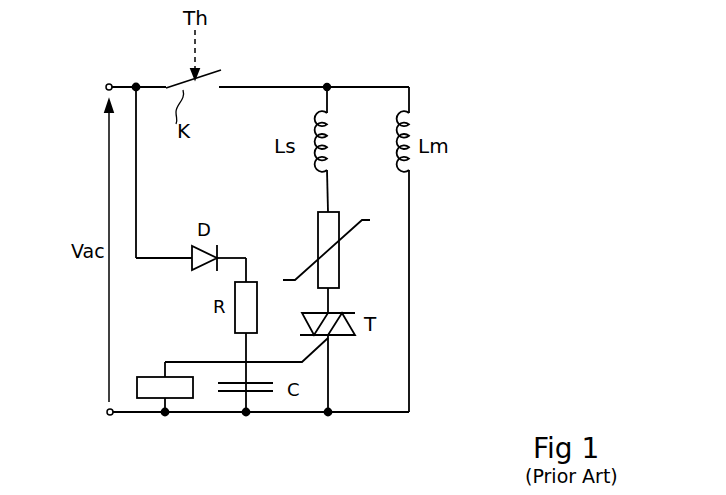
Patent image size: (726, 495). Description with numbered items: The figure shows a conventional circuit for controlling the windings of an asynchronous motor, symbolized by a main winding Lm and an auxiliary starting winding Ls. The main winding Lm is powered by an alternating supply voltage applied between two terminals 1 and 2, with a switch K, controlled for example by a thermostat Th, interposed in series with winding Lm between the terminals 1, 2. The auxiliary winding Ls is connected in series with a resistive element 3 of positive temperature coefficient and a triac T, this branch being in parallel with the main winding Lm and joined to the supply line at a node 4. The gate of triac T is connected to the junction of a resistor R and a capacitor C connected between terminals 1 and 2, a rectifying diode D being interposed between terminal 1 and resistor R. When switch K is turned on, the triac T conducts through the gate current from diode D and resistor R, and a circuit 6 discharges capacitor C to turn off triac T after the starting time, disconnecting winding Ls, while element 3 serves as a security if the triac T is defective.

The terminal 1 is at (108, 84).
The terminal 2 is at (106, 412).
The resistive element of positive temperature coefficient 3 is at (340, 257).
The motor supply node 4 is at (328, 86).
The circuit 6 is at (150, 386).